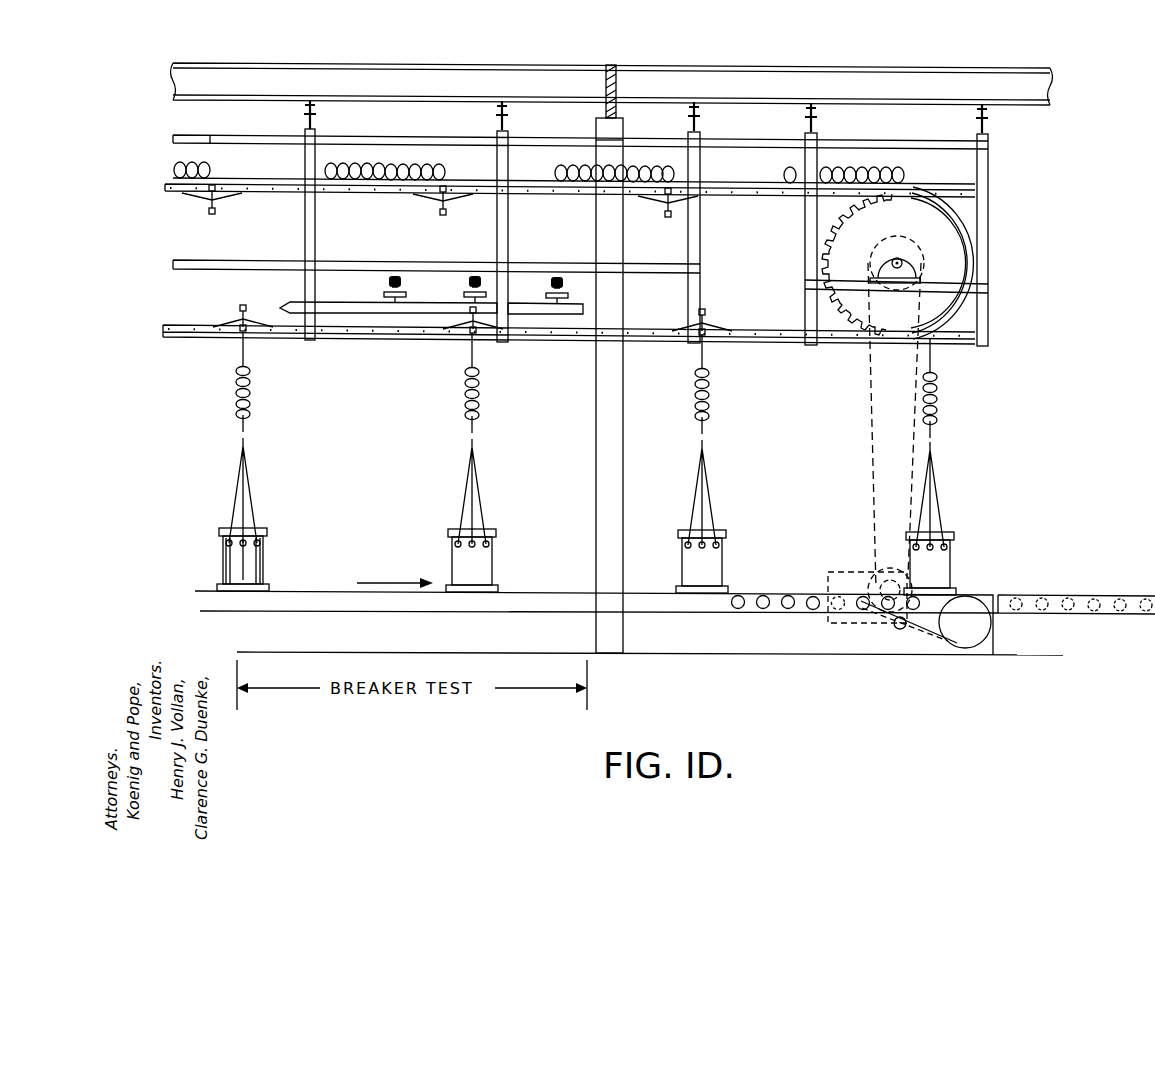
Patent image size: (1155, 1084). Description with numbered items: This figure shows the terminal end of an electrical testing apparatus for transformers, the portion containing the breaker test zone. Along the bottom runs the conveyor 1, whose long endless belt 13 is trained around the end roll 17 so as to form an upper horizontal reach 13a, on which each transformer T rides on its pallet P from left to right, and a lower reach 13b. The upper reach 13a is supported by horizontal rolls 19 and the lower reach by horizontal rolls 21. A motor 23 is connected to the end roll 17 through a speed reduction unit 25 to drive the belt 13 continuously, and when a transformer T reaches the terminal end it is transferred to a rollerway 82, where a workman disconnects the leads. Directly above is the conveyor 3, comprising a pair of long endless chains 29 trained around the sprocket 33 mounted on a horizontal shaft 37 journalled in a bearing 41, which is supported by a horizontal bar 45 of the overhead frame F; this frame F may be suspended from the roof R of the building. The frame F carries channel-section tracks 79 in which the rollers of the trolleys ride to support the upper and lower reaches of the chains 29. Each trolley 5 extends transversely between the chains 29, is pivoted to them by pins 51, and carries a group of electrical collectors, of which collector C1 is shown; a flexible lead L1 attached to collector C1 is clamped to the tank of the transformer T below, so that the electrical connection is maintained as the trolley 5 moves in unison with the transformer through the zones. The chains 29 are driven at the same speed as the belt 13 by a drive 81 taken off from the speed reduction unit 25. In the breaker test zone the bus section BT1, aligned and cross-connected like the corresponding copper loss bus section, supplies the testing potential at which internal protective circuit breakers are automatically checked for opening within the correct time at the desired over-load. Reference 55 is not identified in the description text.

The roof R is at (425, 100).
The overhead frame F is at (302, 236).
The channel-section tracks 79 is at (291, 178).
The endless chains 29 is at (200, 325).
The lead L1 is at (230, 163).
The collector C1 is at (212, 214).
The trolley 5 is at (224, 195).
The contact block 55 is at (206, 197).
The pins 51 is at (216, 197).
The conveyor 3 is at (178, 194).
The bus section BT1 is at (381, 304).
The sprocket 33 is at (818, 249).
The bearing 41 is at (886, 246).
The horizontal shaft 37 is at (892, 264).
The horizontal bar 45 is at (847, 290).
The drive 81 is at (864, 405).
The transformer T is at (252, 565).
The pallet P is at (267, 589).
The endless belt 13 is at (338, 591).
The upper horizontal reach 13a is at (520, 595).
The lower reach 13b is at (515, 612).
The conveyor 1 is at (392, 620).
The horizontal rolls 19 is at (800, 599).
The motor 23 is at (872, 571).
The speed reduction unit 25 is at (838, 624).
The horizontal rolls 21 is at (898, 630).
The end roll 17 is at (963, 649).
The rollerway 82 is at (1072, 596).